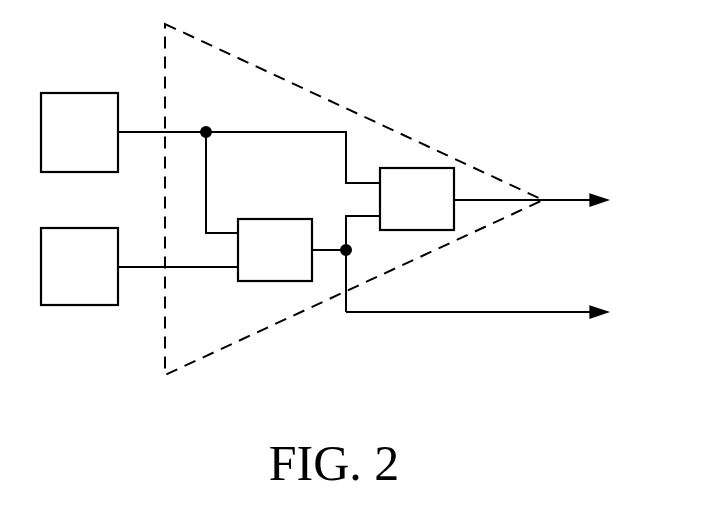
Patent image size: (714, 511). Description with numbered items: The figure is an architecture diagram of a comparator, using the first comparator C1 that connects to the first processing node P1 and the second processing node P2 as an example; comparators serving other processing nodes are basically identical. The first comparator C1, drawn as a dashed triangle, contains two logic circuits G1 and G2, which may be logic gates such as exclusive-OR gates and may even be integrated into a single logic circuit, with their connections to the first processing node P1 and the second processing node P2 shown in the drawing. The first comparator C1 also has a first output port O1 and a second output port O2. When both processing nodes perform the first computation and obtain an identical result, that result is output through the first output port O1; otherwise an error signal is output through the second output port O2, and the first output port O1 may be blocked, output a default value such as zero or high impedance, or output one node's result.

The first processing node P1 is at (79, 132).
The second processing node P2 is at (79, 266).
The logic circuit G1 is at (275, 250).
The logic circuit G2 is at (417, 199).
The first comparator C1 is at (360, 113).
The first output port O1 is at (551, 199).
The second output port O2 is at (497, 311).